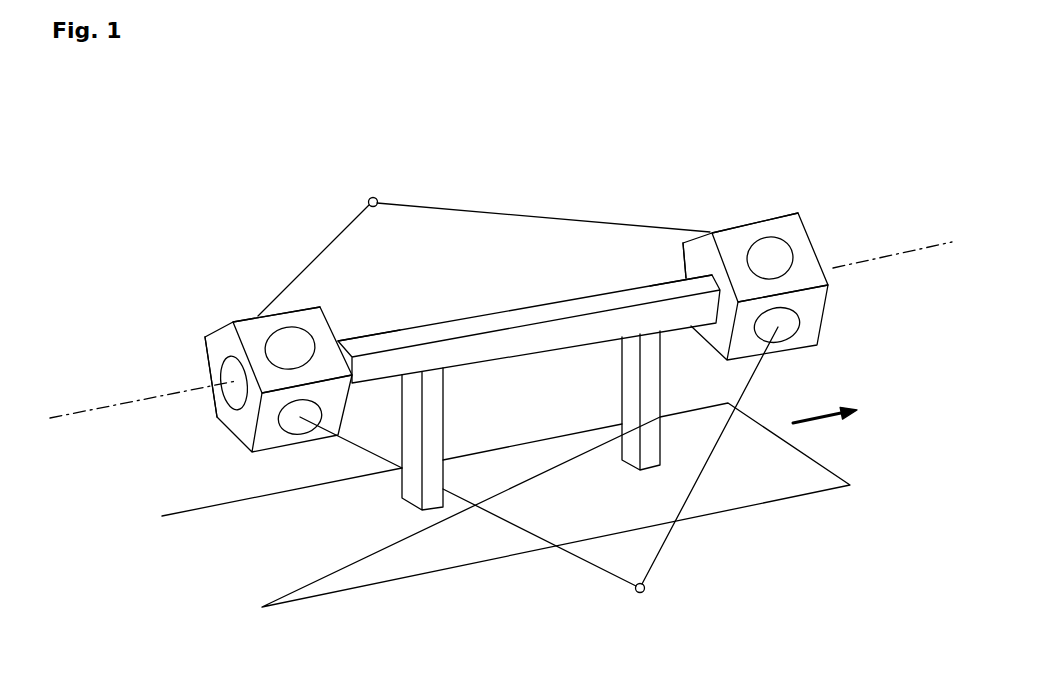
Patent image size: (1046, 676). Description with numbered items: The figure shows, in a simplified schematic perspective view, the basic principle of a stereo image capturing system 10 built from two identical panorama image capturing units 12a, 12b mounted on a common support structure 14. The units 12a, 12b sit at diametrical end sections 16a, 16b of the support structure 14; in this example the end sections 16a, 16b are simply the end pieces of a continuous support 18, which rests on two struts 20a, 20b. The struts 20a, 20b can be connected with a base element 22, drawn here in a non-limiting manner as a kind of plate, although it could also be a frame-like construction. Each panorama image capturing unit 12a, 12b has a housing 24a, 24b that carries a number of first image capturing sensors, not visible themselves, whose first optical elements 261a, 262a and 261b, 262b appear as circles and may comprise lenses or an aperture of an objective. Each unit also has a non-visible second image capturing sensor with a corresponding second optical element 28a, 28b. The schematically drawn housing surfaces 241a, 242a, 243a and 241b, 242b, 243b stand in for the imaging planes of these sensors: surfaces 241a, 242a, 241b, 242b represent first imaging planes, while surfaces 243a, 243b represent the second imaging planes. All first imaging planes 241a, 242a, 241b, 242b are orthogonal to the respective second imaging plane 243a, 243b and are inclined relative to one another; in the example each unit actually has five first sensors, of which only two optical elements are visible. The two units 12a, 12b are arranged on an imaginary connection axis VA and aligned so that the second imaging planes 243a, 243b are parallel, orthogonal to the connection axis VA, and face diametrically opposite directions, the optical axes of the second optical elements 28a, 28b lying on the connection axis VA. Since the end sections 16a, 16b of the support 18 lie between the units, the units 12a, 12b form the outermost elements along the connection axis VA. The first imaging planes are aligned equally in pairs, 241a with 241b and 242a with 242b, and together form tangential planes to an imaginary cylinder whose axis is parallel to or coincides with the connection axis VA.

The stereo image capturing system 10 is at (239, 172).
The panorama image capturing unit 12a is at (736, 204).
The panorama image capturing unit 12b is at (223, 303).
The common support structure 14 is at (464, 311).
The end section 16a is at (675, 292).
The end section 16b is at (360, 348).
The continuous support 18 is at (522, 316).
The strut 20a is at (630, 370).
The strut 20b is at (437, 417).
The base element 22 is at (448, 548).
The housing 24a is at (813, 350).
The housing 24b is at (253, 453).
The second optical element 28a is at (833, 268).
The second optical element 28b is at (213, 370).
The housing surface / first imaging plane 241a is at (810, 315).
The housing surface / first imaging plane 241b is at (318, 432).
The housing surface / first imaging plane 242a is at (798, 222).
The housing surface / first imaging plane 242b is at (322, 328).
The housing surface / second imaging plane 243a is at (828, 280).
The housing surface / second imaging plane 243b is at (238, 422).
The first optical element 261a is at (787, 337).
The first optical element 261b is at (287, 433).
The first optical element 262a is at (773, 253).
The first optical element 262b is at (265, 328).
The connection axis VA is at (118, 402).